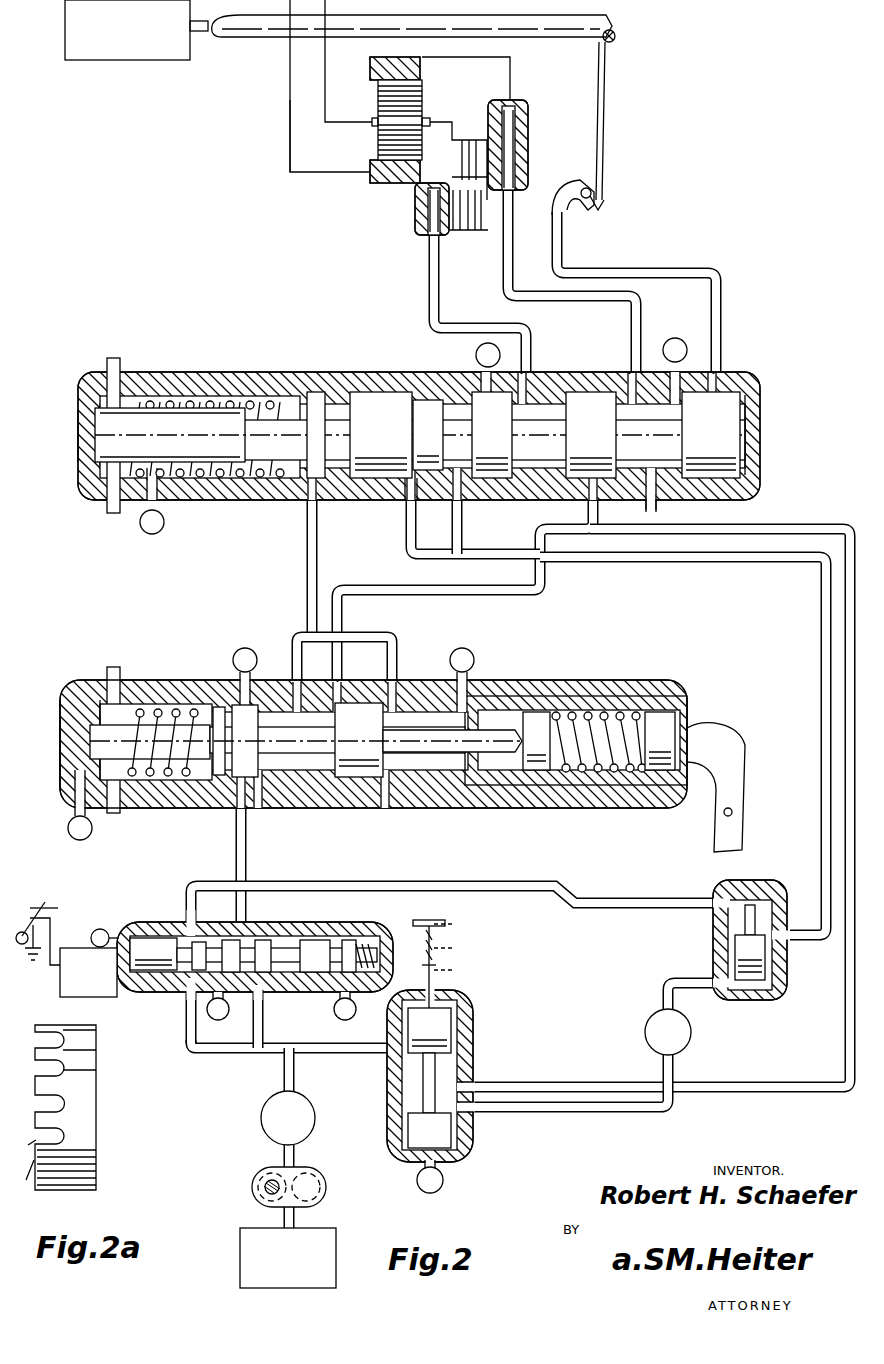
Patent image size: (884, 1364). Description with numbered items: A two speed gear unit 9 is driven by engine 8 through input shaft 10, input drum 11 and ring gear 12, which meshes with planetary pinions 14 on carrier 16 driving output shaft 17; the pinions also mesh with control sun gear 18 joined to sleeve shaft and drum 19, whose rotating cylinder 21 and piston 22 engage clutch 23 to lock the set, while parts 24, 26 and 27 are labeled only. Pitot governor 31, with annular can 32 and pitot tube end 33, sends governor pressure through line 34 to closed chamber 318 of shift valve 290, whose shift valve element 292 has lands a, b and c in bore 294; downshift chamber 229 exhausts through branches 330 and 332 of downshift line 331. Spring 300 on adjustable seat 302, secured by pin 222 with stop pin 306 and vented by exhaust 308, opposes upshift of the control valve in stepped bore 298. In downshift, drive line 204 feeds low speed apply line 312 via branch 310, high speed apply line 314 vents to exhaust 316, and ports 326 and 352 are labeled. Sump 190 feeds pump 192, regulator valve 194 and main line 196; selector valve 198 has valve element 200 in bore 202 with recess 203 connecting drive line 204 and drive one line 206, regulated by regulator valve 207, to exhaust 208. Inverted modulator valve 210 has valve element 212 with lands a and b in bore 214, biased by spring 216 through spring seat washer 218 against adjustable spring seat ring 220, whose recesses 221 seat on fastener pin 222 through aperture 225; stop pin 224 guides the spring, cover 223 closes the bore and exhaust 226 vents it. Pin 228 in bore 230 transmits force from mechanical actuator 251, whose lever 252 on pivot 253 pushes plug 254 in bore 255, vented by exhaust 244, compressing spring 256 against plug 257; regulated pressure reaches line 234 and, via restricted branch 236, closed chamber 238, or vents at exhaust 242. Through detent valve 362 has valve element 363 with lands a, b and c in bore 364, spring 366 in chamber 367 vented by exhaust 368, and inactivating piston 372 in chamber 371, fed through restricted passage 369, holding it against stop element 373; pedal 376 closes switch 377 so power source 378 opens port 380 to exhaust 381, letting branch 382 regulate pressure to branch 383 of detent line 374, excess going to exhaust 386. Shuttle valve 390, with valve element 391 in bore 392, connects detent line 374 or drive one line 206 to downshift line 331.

In FIG. 2, the engine 8 is at (136, 48).
In FIG. 2, the input shaft 10 is at (412, 50).
In FIG. 2, the two speed gear unit 9 is at (229, 108).
In FIG. 2, the input drum 11 is at (308, 86).
In FIG. 2, the control sun gear 18 is at (374, 66).
In FIG. 2, the ring gear 12 is at (374, 182).
In FIG. 2, the planetary pinions 14 is at (418, 113).
In FIG. 2, the carrier 16 is at (331, 136).
In FIG. 2, the sleeve shaft and drum 19 is at (484, 76).
In FIG. 2, the clutch 23 is at (457, 151).
In FIG. 2, the clutch plates 27 is at (469, 206).
In FIG. 2, the rotating cylinder 21 is at (526, 139).
In FIG. 2, the piston 22 is at (533, 149).
In FIG. 2, the cylinder 24 is at (409, 209).
In FIG. 2, the piston 26 is at (410, 227).
In FIG. 2, the output shaft 17 is at (626, 54).
In FIG. 2, the annular can 32 is at (625, 126).
In FIG. 2, the pitot tube end 33 is at (611, 174).
In FIG. 2, the pitot governor 31 is at (604, 217).
In FIG. 2, the governor signal line 34 is at (636, 295).
In FIG. 2, the shift valve 290 is at (445, 420).
In FIG. 2, the fastener pin 222 is at (90, 571).
In FIG. 2, the valve cover 223 is at (55, 620).
In FIG. 2, the adjustable seat 302 is at (206, 407).
In FIG. 2, the spring 300 is at (420, 398).
In FIG. 2, the stop pin 306 is at (214, 509).
In FIG. 2, the land c is at (375, 666).
In FIG. 2, the three stepped bore 298 is at (396, 410).
In FIG. 2, the restricted branch 236 is at (369, 518).
In FIG. 2, the downshift chamber 229 is at (472, 412).
In FIG. 2, the shift valve element 292 is at (590, 409).
In FIG. 2, the land b is at (419, 640).
In FIG. 2, the closed chamber 318 is at (774, 417).
In FIG. 2, the land a is at (494, 666).
In FIG. 2, the exhaust 308 is at (145, 542).
In FIG. 2, the exhaust port 326 is at (482, 333).
In FIG. 2, the exhaust 316 is at (719, 334).
In FIG. 2, the high speed drive apply line 314 is at (598, 243).
In FIG. 2, the low speed drive apply line 312 is at (456, 286).
In FIG. 2, the inverted modulator pressure line 234 is at (280, 568).
In FIG. 2, the branch 310 is at (465, 592).
In FIG. 2, the branch 332 is at (450, 536).
In FIG. 2, the branch 330 is at (484, 525).
In FIG. 2, the port 352 is at (388, 527).
In FIG. 2, the bore 294 is at (674, 511).
In FIG. 2, the drive line 204 is at (558, 792).
In FIG. 2, the downshift line 331 is at (687, 769).
In FIG. 2, the inverted modulator valve 210 is at (373, 711).
In FIG. 2, the recesses 221 is at (58, 725).
In FIG. 2A, the recesses 221 is at (19, 1172).
In FIG. 2, the aperture 225 is at (129, 797).
In FIG. 2, the adjustable spring seat ring 220 is at (57, 745).
In FIG. 2A, the adjustable spring seat ring 220 is at (92, 1107).
In FIG. 2, the stop pin 224 is at (163, 710).
In FIG. 2, the bore 214 is at (337, 775).
In FIG. 2, the valve element 212 is at (331, 774).
In FIG. 2, the force transmitting pin 228 is at (306, 703).
In FIG. 2, the closed chamber 238 is at (358, 836).
In FIG. 2, the bore 230 is at (424, 807).
In FIG. 2, the biasing spring 216 is at (113, 836).
In FIG. 2, the spring seat washer 218 is at (109, 861).
In FIG. 2, the branch 383 is at (256, 839).
In FIG. 2, the exhaust 242 is at (228, 650).
In FIG. 2, the exhaust 244 is at (483, 645).
In FIG. 2, the exhaust 226 is at (64, 842).
In FIG. 2, the slidable plug 257 is at (519, 710).
In FIG. 2, the spring 256 is at (562, 675).
In FIG. 2, the bore 255 is at (599, 708).
In FIG. 2, the plug 254 is at (668, 710).
In FIG. 2, the mechanical actuator 251 is at (736, 695).
In FIG. 2, the lever 252 is at (730, 780).
In FIG. 2, the pivot 253 is at (756, 798).
In FIG. 2, the inactivating piston 372 is at (255, 962).
In FIG. 2, the valve element 363 is at (277, 933).
In FIG. 2, the spring 366 is at (330, 933).
In FIG. 2, the spring chamber 367 is at (380, 931).
In FIG. 2, the chamber 371 is at (106, 912).
In FIG. 2, the port 380 is at (160, 1000).
In FIG. 2, the restricted passage 369 is at (162, 1018).
In FIG. 2, the exhaust 386 is at (207, 1013).
In FIG. 2, the bore 364 is at (317, 1004).
In FIG. 2, the exhaust 381 is at (81, 931).
In FIG. 2, the switch 377 is at (73, 938).
In FIG. 2, the throttle pedal 376 is at (29, 905).
In FIG. 2, the grounded power source 378 is at (21, 954).
In FIG. 2, the detent line 374 is at (453, 950).
In FIG. 2, the branch 382 is at (284, 1059).
In FIG. 2, the manual selector valve 198 is at (495, 1071).
In FIG. 2, the valve element 200 is at (458, 1021).
In FIG. 2, the bore 202 is at (458, 1099).
In FIG. 2, the through detent valve 362 is at (457, 950).
In FIG. 2, the stop element 373 is at (409, 945).
In FIG. 2, the exhaust 368 is at (413, 969).
In FIG. 2, the exhaust 208 is at (446, 1177).
In FIG. 2, the recess 203 is at (370, 1101).
In FIG. 2, the main line 196 is at (346, 1073).
In FIG. 2, the bore 392 is at (760, 930).
In FIG. 2, the shuttle valve 390 is at (695, 929).
In FIG. 2, the valve element 391 is at (773, 971).
In FIG. 2, the regulator valve 207 is at (647, 1032).
In FIG. 2, the drive one line 206 is at (593, 1065).
In FIG. 2, the regulator valve 194 is at (271, 1104).
In FIG. 2, the input driven pump 192 is at (304, 1177).
In FIG. 2, the sump 190 is at (267, 1247).